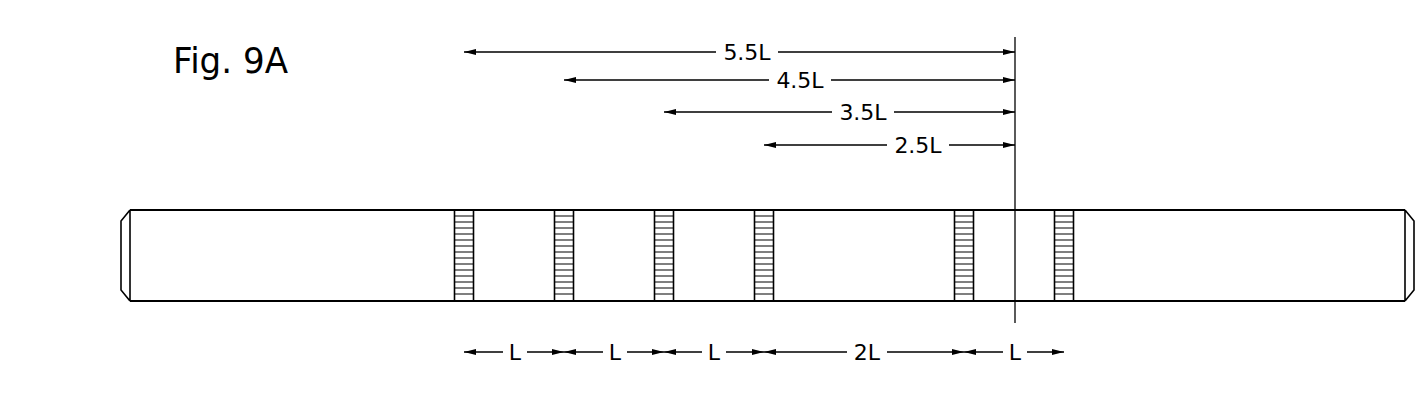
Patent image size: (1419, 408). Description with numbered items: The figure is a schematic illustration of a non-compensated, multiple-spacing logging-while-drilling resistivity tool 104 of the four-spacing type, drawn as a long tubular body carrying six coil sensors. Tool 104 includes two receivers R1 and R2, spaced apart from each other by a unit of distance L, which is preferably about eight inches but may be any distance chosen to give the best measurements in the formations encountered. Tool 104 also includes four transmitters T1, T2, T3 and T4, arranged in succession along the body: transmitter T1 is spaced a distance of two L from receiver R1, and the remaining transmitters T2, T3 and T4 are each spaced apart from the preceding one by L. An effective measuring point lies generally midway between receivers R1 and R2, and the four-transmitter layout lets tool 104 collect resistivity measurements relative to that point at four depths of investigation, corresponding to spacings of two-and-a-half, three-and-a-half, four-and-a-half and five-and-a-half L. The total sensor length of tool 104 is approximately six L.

The non-compensated four-spacing tool 104 is at (405, 355).
The transmitter T1 is at (764, 367).
The transmitter T2 is at (664, 367).
The transmitter T3 is at (564, 367).
The transmitter T4 is at (464, 367).
The receiver R1 is at (964, 367).
The receiver R2 is at (1064, 367).